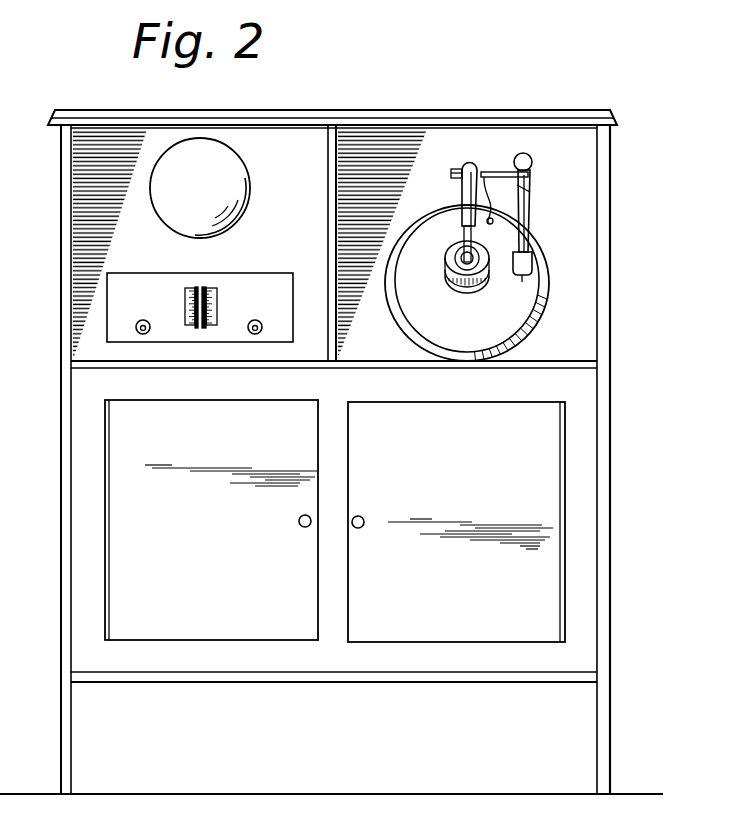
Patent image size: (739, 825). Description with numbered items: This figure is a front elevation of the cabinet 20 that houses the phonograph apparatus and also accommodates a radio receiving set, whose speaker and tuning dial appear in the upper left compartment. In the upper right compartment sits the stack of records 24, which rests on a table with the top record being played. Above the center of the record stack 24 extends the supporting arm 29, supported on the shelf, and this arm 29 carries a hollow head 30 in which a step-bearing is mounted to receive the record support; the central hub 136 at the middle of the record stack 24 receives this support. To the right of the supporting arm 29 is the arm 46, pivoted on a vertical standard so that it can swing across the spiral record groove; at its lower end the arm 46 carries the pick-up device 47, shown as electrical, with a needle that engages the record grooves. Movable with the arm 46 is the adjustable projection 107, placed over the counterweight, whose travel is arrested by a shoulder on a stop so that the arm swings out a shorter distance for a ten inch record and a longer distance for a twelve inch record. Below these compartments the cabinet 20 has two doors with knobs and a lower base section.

The cabinet 20 is at (612, 477).
The stack of records 24 is at (510, 296).
The supporting arm 29 is at (463, 185).
The hollow head 30 is at (470, 289).
The arm 46 is at (531, 207).
The pick-up device 47 is at (533, 257).
The adjustable projection 107 is at (507, 173).
The hub 136 is at (448, 263).